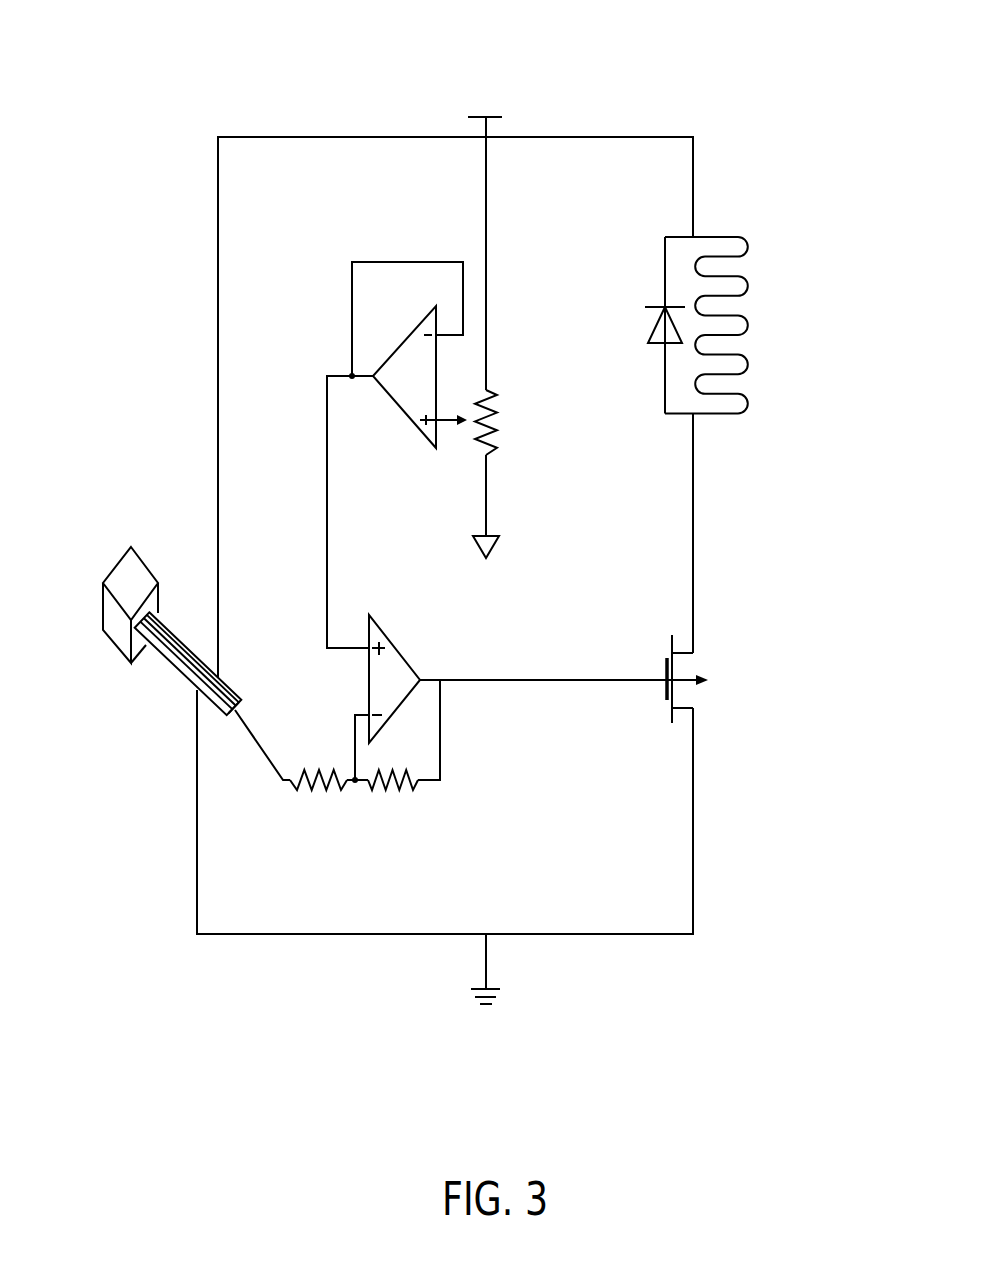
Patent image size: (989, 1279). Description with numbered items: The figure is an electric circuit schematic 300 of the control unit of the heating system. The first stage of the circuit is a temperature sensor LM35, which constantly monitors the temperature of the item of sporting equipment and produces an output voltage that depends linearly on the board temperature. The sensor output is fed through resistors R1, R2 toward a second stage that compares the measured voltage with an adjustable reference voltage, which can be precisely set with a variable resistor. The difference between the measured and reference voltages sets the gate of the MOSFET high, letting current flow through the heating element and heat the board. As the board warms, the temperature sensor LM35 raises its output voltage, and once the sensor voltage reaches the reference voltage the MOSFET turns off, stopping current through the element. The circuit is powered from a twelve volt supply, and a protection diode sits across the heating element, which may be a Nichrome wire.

The electric circuit schematic 300 is at (170, 69).
The resistor R1 is at (318, 803).
The resistor R2 is at (393, 803).
The temperature sensor LM35 is at (172, 627).